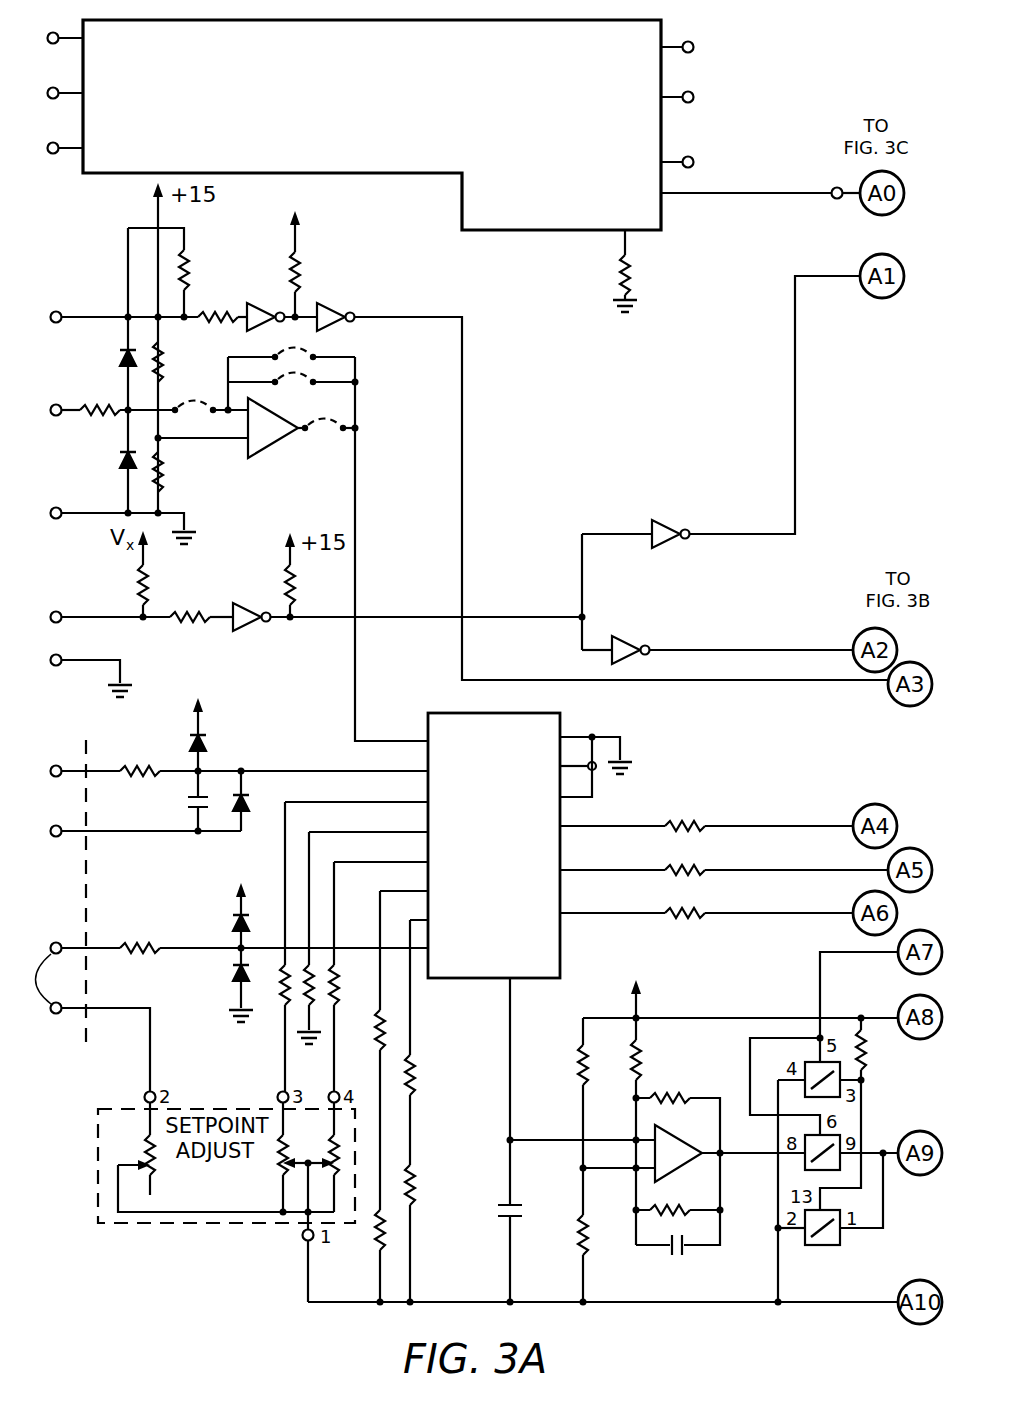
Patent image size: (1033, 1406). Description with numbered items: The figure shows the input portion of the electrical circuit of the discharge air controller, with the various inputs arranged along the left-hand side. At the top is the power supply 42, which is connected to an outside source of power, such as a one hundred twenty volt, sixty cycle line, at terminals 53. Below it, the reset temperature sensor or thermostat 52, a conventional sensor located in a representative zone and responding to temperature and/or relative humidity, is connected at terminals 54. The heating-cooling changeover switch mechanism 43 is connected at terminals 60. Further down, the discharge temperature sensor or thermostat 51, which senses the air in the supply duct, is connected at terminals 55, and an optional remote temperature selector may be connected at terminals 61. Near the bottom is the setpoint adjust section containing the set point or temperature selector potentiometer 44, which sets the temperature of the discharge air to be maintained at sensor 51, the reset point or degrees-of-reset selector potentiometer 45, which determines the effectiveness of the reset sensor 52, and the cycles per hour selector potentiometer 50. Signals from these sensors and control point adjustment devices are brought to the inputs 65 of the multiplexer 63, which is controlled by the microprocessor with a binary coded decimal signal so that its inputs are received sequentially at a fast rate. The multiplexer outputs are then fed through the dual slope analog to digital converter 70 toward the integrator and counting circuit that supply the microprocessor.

The power supply 42 is at (320, 142).
The heating-cooling changeover switch mechanism 43 is at (100, 653).
The set point selector potentiometer 44 is at (166, 1178).
The reset selector potentiometer 45 is at (266, 1178).
The cycles per hour selector potentiometer 50 is at (344, 1178).
The discharge temperature sensor 51 is at (236, 871).
The reset temperature sensor 52 is at (467, 445).
The power supply terminals 53 is at (66, 180).
The reset sensor terminals 54 is at (57, 310).
The discharge sensor terminals 55 is at (57, 764).
The changeover switch terminals 60 is at (57, 610).
The remote temperature selector terminals 61 is at (44, 948).
The multiplexer 63 is at (476, 805).
The multiplexer inputs 65 is at (380, 734).
The dual slope analog to digital converter 70 is at (674, 1057).